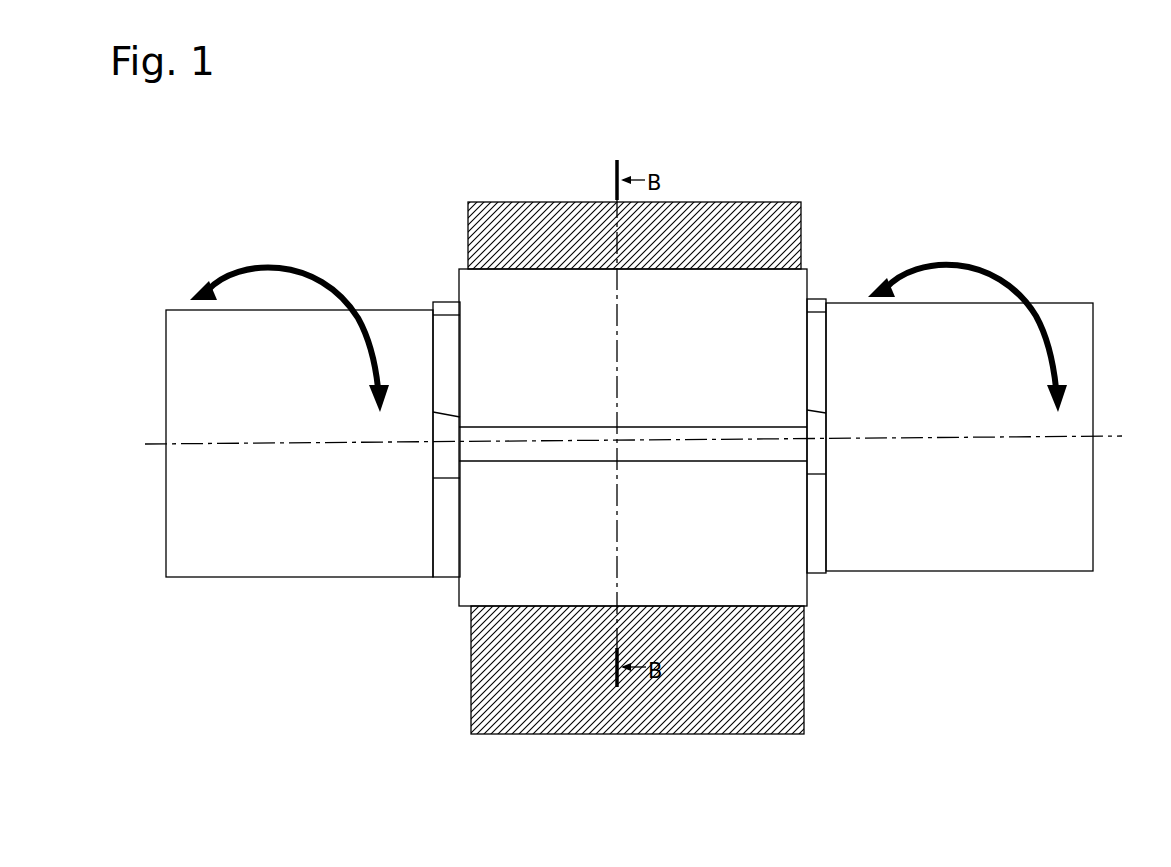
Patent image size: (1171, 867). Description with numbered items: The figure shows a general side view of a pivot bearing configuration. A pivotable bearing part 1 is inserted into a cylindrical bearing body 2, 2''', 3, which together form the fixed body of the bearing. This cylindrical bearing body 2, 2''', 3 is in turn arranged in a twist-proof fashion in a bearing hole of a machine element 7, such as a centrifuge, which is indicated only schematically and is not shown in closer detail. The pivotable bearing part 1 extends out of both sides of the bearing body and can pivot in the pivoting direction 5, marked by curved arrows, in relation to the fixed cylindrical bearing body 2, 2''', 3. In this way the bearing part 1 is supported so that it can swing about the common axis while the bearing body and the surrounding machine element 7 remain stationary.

The pivotable bearing part 1 is at (400, 553).
The cylindrical bearing body 2 is at (598, 713).
The cylindrical bearing body 2''' is at (540, 629).
The cylindrical bearing body 3 is at (520, 338).
The pivoting direction 5 is at (333, 287).
The machine element 7 is at (552, 240).